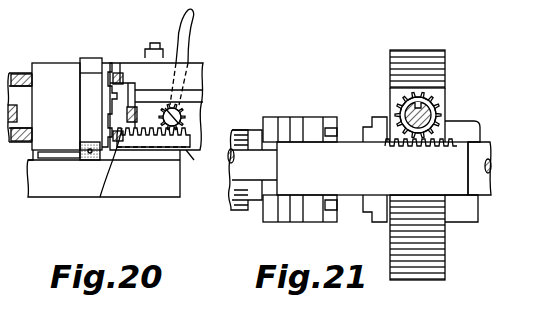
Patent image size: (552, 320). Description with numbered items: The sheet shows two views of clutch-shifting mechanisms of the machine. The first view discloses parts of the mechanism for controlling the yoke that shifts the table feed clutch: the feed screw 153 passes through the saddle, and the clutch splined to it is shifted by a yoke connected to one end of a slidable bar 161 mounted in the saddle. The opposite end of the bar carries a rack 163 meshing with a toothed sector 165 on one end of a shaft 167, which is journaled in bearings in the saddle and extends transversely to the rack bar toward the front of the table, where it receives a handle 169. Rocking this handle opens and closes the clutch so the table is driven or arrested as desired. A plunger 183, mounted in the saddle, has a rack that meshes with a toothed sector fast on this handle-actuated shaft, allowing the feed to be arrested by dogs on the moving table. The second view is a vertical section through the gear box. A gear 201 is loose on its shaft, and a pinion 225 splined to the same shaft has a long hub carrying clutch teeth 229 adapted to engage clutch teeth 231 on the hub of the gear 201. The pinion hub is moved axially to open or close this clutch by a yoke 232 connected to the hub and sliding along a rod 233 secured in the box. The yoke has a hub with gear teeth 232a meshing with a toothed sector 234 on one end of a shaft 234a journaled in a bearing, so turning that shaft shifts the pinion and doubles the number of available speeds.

In FIG. 20, the feed screw 153 is at (102, 177).
In FIG. 20, the slidable bar 161 is at (190, 132).
In FIG. 20, the rack 163 is at (150, 137).
In FIG. 20, the toothed sector 165 is at (203, 163).
In FIG. 20, the shaft 167 is at (184, 110).
In FIG. 20, the handle 169 is at (192, 22).
In FIG. 20, the plunger 183 is at (152, 47).
In FIG. 21, the gear 201 is at (390, 65).
In FIG. 21, the pinion 225 is at (233, 210).
In FIG. 21, the clutch teeth 229 is at (330, 117).
In FIG. 21, the clutch teeth 231 is at (368, 117).
In FIG. 21, the yoke 232 is at (290, 117).
In FIG. 21, the gear teeth 232a is at (460, 140).
In FIG. 21, the rod 233 is at (492, 166).
In FIG. 21, the toothed sector 234 is at (440, 112).
In FIG. 21, the shaft 234a is at (422, 112).